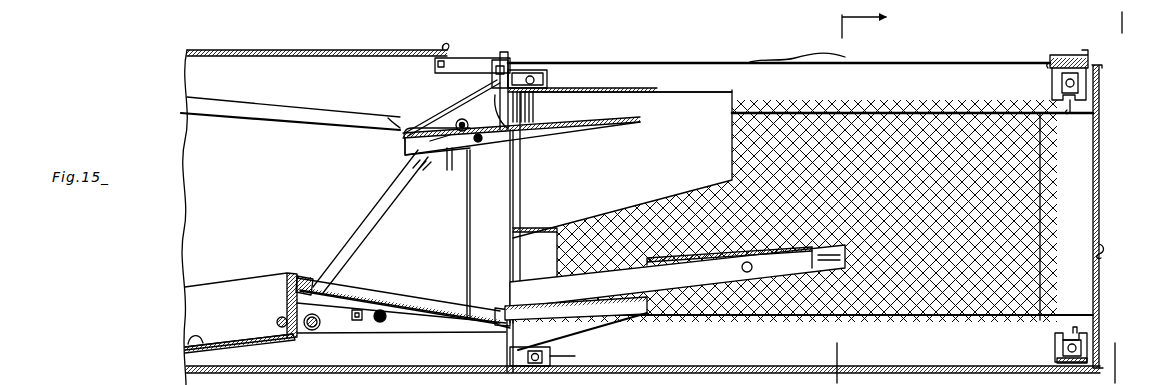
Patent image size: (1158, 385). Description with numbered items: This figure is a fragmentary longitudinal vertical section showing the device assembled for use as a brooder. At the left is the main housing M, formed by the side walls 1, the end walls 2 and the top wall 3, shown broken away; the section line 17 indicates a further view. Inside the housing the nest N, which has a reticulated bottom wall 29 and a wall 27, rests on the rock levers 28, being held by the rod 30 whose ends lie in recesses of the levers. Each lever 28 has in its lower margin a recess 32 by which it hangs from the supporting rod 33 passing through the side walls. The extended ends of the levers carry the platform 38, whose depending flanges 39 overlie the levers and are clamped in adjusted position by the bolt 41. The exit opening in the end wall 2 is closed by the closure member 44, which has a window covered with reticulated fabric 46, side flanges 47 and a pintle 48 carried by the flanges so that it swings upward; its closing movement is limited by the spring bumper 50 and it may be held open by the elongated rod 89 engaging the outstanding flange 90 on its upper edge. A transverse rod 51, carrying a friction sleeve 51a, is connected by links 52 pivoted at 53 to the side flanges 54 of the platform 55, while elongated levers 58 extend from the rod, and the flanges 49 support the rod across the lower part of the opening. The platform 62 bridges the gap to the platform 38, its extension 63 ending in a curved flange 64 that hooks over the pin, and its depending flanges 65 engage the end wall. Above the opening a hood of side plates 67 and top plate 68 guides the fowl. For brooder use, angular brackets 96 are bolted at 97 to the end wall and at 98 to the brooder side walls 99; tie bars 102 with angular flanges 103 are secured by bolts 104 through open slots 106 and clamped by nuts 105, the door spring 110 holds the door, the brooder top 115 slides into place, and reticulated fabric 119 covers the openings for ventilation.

The side wall 1 is at (192, 236).
The end wall 2 is at (505, 333).
The top wall 3 is at (251, 50).
The section line 17 is at (979, 196).
The box 27 is at (202, 301).
The rock lever 28 is at (310, 332).
The reticulated bottom wall 29 is at (190, 333).
The rod 30 is at (281, 318).
The recess 32 is at (342, 338).
The supporting rod 33 is at (381, 323).
The platform 38 is at (697, 258).
The depending flange 39 is at (783, 334).
The bolt 41 is at (752, 267).
The closure member 44 is at (405, 141).
The reticulated fabric 46 is at (576, 124).
The inwardly disposed flange 47 is at (452, 160).
The supporting rod or pintle 48 is at (479, 143).
The flange 49 is at (467, 235).
The spring member or bumper 50 is at (483, 82).
The rod 51 is at (468, 124).
The sleeve 51a is at (452, 137).
The lever or link 52 is at (378, 213).
The pivot 53 is at (309, 280).
The side flange 54 is at (397, 298).
The platform 55 is at (430, 305).
The elongated lever 58 is at (287, 110).
The platform 62 is at (592, 304).
The extension 63 is at (502, 315).
The curved flange 64 is at (500, 328).
The depending flange 65 is at (595, 328).
The side plate 67 is at (734, 106).
The top plate 68 is at (638, 88).
The elongated rod 89 is at (451, 109).
The outstanding flange 90 is at (402, 130).
The angular bracket 96 is at (562, 63).
The bolt 97 is at (552, 356).
The bolt 98 is at (531, 70).
The side wall 99 is at (921, 80).
The tie bar 102 is at (1050, 62).
The angular flange 103 is at (1052, 89).
The bolt 104 is at (1074, 83).
The clamping nut 105 is at (1052, 82).
The open slot 106 is at (1069, 112).
The spring 110 is at (1101, 222).
The brooder top 115 is at (688, 62).
The reticulated fabric 119 is at (846, 122).
The main housing M is at (319, 50).
The nest N is at (217, 283).